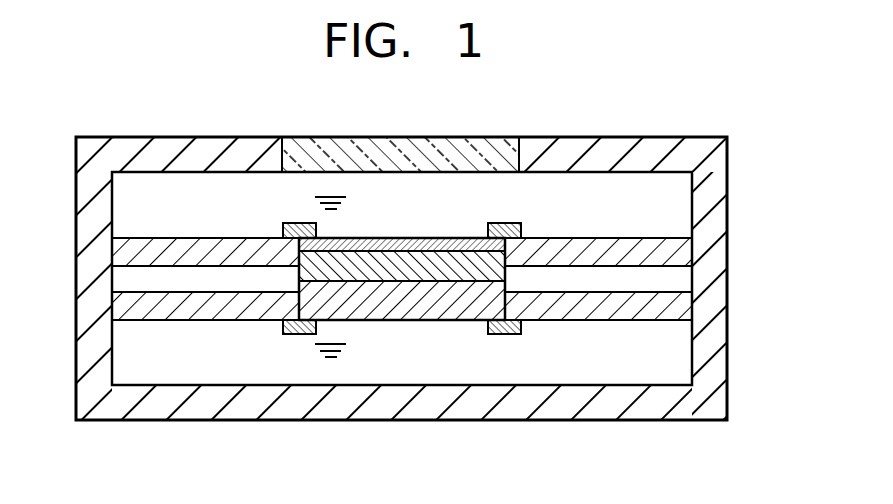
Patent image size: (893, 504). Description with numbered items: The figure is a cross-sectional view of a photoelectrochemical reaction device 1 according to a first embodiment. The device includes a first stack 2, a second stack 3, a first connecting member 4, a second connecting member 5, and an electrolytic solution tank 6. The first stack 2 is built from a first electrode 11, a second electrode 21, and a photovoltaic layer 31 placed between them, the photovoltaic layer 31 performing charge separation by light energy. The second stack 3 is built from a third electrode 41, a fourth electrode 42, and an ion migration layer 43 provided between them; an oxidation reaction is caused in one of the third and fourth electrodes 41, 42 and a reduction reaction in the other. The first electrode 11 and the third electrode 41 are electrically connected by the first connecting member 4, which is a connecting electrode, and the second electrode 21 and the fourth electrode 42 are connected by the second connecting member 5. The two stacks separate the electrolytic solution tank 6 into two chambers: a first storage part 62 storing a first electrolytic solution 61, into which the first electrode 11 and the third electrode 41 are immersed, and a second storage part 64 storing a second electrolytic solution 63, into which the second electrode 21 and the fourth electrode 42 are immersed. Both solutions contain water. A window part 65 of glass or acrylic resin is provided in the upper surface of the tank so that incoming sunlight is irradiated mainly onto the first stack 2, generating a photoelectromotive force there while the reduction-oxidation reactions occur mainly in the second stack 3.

The photoelectrochemical reaction device 1 is at (696, 113).
The first stack 2 is at (402, 281).
The second stack 3 is at (353, 215).
The first connecting member 4 is at (497, 223).
The second connecting member 5 is at (510, 335).
The electrolytic solution tank 6 is at (428, 260).
The first electrode 11 is at (347, 241).
The second electrode 21 is at (450, 308).
The photovoltaic layer 31 is at (403, 272).
The third electrode 41 is at (140, 252).
The fourth electrode 42 is at (140, 311).
The ion migration layer 43 is at (131, 282).
The first electrolytic solution 61 is at (671, 193).
The first storage part 62 is at (692, 213).
The second electrolytic solution 63 is at (667, 333).
The second storage part 64 is at (693, 366).
The window part 65 is at (322, 152).